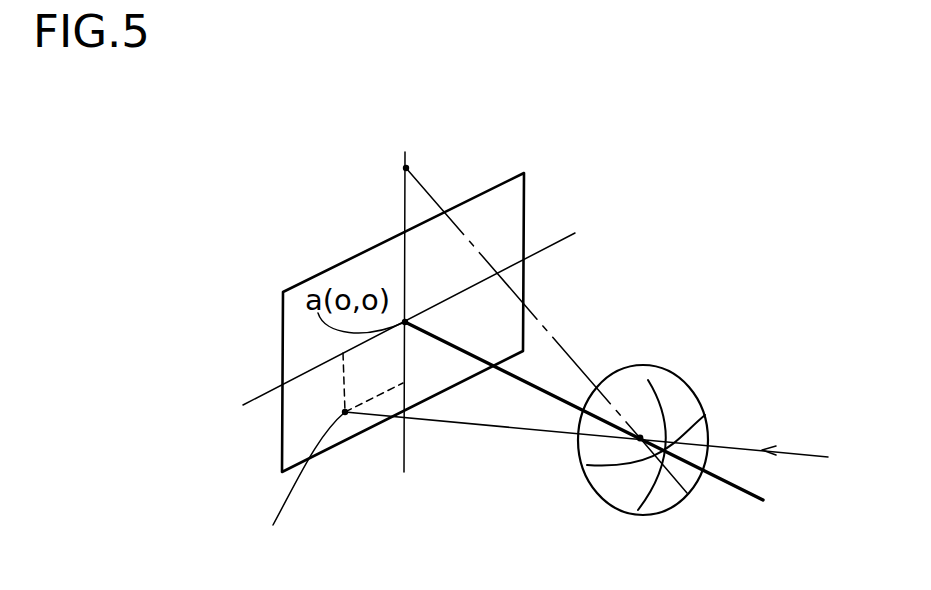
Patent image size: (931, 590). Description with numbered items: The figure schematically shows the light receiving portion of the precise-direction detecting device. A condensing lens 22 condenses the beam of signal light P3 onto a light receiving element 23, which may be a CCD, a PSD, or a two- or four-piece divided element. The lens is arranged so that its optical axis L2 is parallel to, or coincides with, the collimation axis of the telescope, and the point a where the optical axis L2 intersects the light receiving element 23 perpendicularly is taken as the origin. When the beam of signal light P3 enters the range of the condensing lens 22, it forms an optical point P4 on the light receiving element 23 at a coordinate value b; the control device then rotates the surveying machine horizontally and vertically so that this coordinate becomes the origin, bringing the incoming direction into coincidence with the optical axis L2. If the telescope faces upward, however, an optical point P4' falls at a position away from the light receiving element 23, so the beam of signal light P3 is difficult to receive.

The condensing lens 22 is at (672, 382).
The light receiving element 23 is at (472, 213).
The beam of signal light P3 is at (580, 369).
The optical point P4 is at (307, 459).
The optical point P4' is at (368, 136).
The optical axis L2 is at (728, 485).